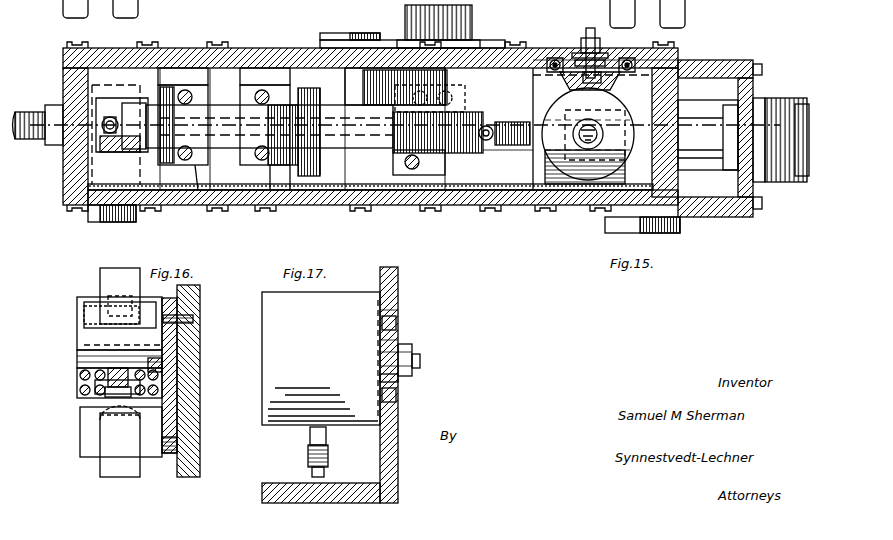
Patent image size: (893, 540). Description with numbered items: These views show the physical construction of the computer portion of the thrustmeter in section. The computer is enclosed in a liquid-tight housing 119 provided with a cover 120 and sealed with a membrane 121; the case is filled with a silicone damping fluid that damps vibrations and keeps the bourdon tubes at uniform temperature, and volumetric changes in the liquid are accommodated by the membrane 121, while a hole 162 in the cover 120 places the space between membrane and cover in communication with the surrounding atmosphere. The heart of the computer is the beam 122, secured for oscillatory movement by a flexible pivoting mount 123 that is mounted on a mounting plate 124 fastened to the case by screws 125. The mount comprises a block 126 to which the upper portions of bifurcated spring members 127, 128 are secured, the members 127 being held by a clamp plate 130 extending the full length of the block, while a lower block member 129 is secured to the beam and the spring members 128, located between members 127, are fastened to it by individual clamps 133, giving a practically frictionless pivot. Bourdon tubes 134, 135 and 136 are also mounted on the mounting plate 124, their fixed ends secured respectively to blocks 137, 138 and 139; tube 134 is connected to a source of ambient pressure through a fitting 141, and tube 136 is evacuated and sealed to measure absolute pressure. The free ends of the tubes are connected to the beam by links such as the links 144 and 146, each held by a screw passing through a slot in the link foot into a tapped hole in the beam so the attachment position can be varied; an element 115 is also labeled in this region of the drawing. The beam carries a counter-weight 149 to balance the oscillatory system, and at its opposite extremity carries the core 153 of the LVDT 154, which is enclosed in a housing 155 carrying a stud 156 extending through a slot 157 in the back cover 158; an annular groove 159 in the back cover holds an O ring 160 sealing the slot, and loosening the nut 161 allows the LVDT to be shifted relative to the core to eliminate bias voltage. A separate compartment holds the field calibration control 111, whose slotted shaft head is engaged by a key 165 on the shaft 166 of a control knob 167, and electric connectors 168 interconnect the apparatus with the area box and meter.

In FIG. 15, the field calibration control 111 is at (470, 105).
In FIG. 15, the pin 115 is at (488, 126).
In FIG. 15, the housing 119 is at (62, 72).
In FIG. 16, the housing 119 is at (202, 451).
In FIG. 15, the cover 120 is at (455, 208).
In FIG. 15, the membrane 121 is at (512, 175).
In FIG. 16, the beam 122 is at (118, 368).
In FIG. 17, the beam 122 is at (308, 452).
In FIG. 15, the flexible pivoting mount 123 is at (274, 178).
In FIG. 16, the flexible pivoting mount 123 is at (70, 324).
In FIG. 15, the mounting plate 124 is at (242, 75).
In FIG. 16, the mounting plate 124 is at (170, 456).
In FIG. 16, the screws 125 is at (193, 320).
In FIG. 15, the block 126 is at (300, 180).
In FIG. 16, the block 126 is at (93, 326).
In FIG. 16, the spring members 127 is at (138, 346).
In FIG. 16, the spring members 128 is at (108, 397).
In FIG. 16, the block member 129 is at (75, 388).
In FIG. 16, the clamp plate 130 is at (78, 358).
In FIG. 16, the clamps 133 is at (95, 392).
In FIG. 15, the bourdon tube 134 is at (246, 160).
In FIG. 16, the bourdon tube 134 is at (100, 275).
In FIG. 15, the bourdon tube 135 is at (452, 153).
In FIG. 16, the bourdon tube 136 is at (108, 468).
In FIG. 15, the block 137 is at (198, 190).
In FIG. 15, the block 138 is at (398, 168).
In FIG. 15, the block 139 is at (250, 170).
In FIG. 16, the block 139 is at (88, 413).
In FIG. 15, the fitting 141 is at (52, 105).
In FIG. 15, the link 144 is at (118, 152).
In FIG. 15, the link 146 is at (320, 150).
In FIG. 15, the counter-weight 149 is at (140, 103).
In FIG. 15, the core 153 is at (586, 148).
In FIG. 15, the LVDT 154 is at (588, 136).
In FIG. 15, the housing 155 is at (545, 175).
In FIG. 17, the housing 155 is at (321, 358).
In FIG. 15, the stud 156 is at (590, 38).
In FIG. 17, the stud 156 is at (420, 366).
In FIG. 15, the slot 157 is at (628, 60).
In FIG. 17, the slot 157 is at (400, 378).
In FIG. 15, the back cover 158 is at (515, 60).
In FIG. 17, the back cover 158 is at (398, 296).
In FIG. 15, the annular groove 159 is at (640, 60).
In FIG. 17, the annular groove 159 is at (400, 316).
In FIG. 15, the O ring 160 is at (555, 60).
In FIG. 16, the O ring 160 is at (198, 371).
In FIG. 17, the O ring 160 is at (396, 326).
In FIG. 15, the nut 161 is at (586, 38).
In FIG. 17, the nut 161 is at (412, 352).
In FIG. 15, the hole 162 is at (170, 200).
In FIG. 15, the key 165 is at (475, 98).
In FIG. 15, the shaft 166 is at (480, 48).
In FIG. 15, the control knob 167 is at (474, 12).
In FIG. 15, the electric connectors 168 is at (777, 98).